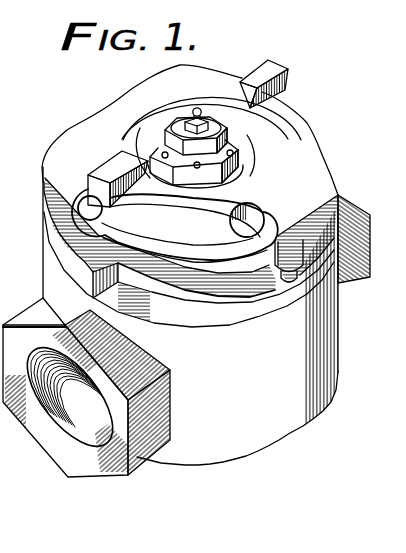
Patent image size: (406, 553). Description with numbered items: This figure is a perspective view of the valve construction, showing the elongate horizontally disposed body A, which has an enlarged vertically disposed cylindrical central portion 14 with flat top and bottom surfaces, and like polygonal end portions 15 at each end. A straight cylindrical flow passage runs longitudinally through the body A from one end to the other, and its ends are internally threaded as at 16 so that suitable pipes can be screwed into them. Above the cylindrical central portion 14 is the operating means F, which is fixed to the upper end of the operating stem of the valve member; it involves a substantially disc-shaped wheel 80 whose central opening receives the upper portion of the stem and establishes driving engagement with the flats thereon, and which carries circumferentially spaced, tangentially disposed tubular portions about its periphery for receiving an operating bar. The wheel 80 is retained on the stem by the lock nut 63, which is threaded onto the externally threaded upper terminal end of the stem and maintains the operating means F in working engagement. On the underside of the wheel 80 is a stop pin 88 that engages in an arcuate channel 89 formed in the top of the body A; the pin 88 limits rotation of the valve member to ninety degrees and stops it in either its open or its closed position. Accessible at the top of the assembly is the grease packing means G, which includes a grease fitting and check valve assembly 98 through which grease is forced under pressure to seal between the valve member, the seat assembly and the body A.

The operating means F is at (99, 110).
The grease packing means G is at (208, 106).
The wheel 80 is at (100, 148).
The grease fitting and check valve assembly 98 is at (222, 133).
The lock nut 63 is at (240, 155).
The stop pin 88 is at (293, 281).
The arcuate channel 89 is at (193, 312).
The cylindrical central portion 14 is at (297, 338).
The internal threads 16 is at (70, 422).
The polygonal end portions 15 is at (147, 432).
The body A is at (278, 410).